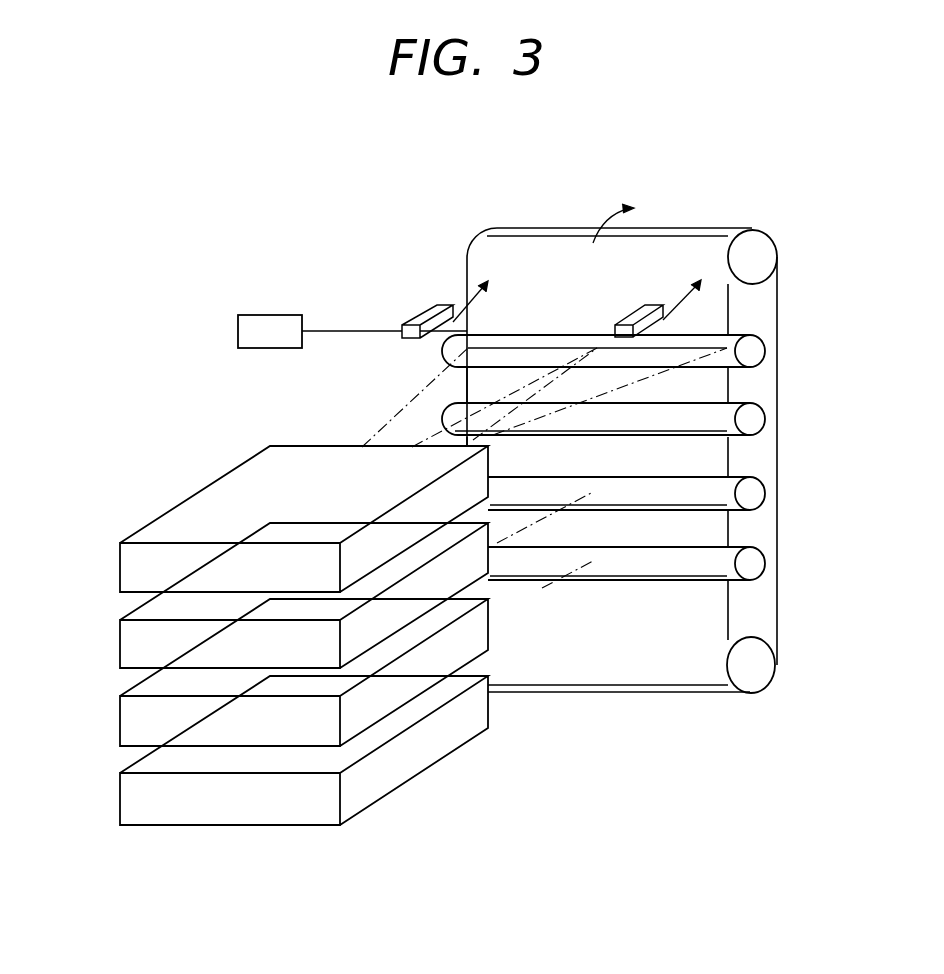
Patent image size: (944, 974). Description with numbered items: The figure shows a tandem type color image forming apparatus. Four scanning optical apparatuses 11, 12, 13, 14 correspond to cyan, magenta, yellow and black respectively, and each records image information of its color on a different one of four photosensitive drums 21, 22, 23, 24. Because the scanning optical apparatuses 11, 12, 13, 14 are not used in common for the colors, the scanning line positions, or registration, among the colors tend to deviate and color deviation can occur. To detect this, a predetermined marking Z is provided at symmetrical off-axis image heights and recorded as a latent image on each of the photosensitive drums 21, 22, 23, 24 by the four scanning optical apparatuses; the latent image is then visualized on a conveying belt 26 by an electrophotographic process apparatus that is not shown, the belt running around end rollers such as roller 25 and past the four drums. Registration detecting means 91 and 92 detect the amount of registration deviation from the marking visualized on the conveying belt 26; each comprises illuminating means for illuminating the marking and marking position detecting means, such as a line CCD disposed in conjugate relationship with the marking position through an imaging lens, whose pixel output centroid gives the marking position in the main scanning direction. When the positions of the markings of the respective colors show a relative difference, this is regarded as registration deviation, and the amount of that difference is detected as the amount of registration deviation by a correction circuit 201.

The scanning optical apparatus 11 is at (127, 800).
The scanning optical apparatus 12 is at (127, 721).
The scanning optical apparatus 13 is at (127, 645).
The scanning optical apparatus 14 is at (127, 568).
The photosensitive drum 21 is at (760, 565).
The photosensitive drum 22 is at (760, 495).
The photosensitive drum 23 is at (760, 421).
The photosensitive drum 24 is at (760, 352).
The lower belt roller 25 is at (767, 670).
The conveying belt 26 is at (780, 278).
The registration detecting means 91 is at (420, 312).
The registration detecting means 92 is at (648, 303).
The correction circuit 201 is at (253, 314).